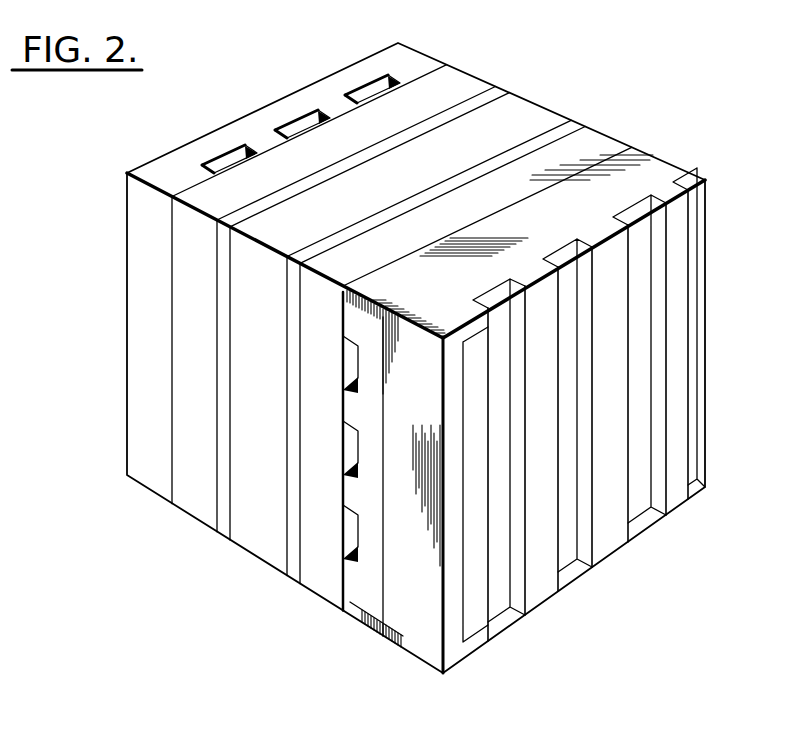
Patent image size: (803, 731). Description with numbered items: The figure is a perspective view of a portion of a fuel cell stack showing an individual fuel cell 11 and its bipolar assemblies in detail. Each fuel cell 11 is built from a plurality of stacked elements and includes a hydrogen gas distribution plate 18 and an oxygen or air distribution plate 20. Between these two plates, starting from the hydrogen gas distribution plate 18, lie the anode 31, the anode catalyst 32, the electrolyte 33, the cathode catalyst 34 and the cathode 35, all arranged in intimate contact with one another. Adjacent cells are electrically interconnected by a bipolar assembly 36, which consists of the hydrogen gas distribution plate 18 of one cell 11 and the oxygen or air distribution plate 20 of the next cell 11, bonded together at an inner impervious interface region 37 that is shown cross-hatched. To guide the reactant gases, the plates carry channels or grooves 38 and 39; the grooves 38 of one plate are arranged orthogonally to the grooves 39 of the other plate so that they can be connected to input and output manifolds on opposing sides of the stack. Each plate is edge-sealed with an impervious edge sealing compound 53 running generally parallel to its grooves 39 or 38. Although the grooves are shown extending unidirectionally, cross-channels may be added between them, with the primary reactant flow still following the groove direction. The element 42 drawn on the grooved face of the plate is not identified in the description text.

The plate stack assembly 11 is at (126, 263).
The plate 18 is at (371, 72).
The end section 20 is at (373, 571).
The first plate section 31 is at (452, 77).
The second plate section 32 is at (486, 90).
The third plate section 33 is at (524, 98).
The fourth plate section 34 is at (554, 118).
The fifth plate section 35 is at (594, 136).
The edge strip 36 is at (368, 634).
The end plate 37 is at (653, 157).
The slot 38 is at (296, 126).
The opening 39 is at (343, 441).
The tab 42 is at (376, 424).
The spacer plate 53 is at (620, 152).